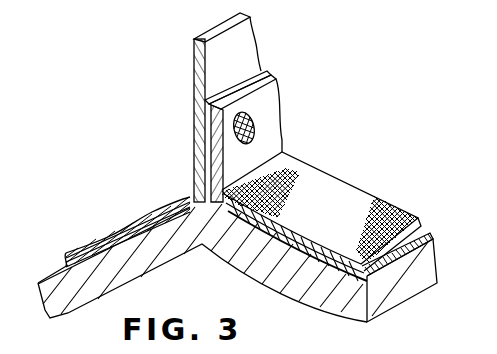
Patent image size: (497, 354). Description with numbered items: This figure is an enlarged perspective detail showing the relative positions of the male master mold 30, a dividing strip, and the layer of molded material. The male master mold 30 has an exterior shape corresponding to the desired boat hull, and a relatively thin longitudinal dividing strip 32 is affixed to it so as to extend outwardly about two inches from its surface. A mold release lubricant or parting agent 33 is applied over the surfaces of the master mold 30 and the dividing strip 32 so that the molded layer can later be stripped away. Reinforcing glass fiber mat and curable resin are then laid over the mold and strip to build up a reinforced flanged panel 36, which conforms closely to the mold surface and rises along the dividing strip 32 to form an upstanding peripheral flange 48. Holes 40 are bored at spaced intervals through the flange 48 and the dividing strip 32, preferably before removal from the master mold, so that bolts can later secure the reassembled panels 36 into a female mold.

The male master mold 30 is at (427, 264).
The longitudinal dividing strip 32 is at (222, 51).
The mold release lubricant or parting agent 33 is at (258, 70).
The flanged panel or section 36 is at (327, 187).
The hole 40 is at (243, 140).
The upstanding peripheral flange 48 is at (259, 136).